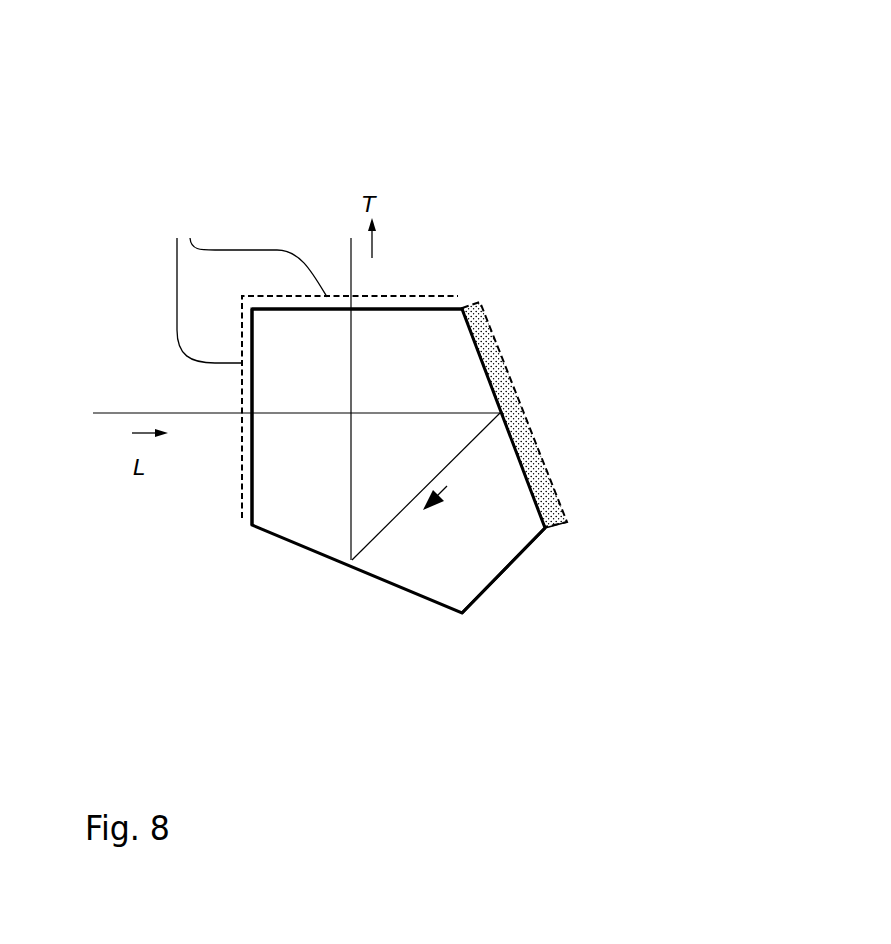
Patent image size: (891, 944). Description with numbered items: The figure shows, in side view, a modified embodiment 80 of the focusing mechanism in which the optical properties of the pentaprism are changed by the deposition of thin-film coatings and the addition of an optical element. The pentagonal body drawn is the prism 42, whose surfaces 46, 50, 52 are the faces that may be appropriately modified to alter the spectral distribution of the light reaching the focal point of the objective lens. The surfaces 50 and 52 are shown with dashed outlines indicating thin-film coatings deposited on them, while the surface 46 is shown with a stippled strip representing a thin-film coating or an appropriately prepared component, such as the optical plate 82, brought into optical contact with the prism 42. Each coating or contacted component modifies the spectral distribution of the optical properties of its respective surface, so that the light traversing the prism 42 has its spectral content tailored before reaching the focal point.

The embodiment 80 is at (145, 127).
The optical plate 82 is at (510, 380).
The surface 52 is at (436, 310).
The surface 50 is at (255, 492).
The prism 42 is at (488, 593).
The surface 46 is at (543, 523).